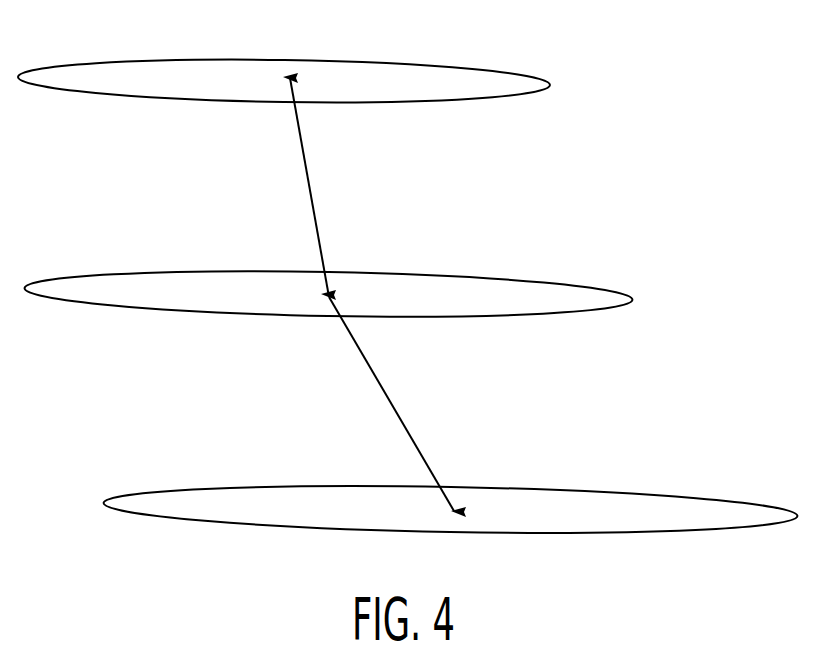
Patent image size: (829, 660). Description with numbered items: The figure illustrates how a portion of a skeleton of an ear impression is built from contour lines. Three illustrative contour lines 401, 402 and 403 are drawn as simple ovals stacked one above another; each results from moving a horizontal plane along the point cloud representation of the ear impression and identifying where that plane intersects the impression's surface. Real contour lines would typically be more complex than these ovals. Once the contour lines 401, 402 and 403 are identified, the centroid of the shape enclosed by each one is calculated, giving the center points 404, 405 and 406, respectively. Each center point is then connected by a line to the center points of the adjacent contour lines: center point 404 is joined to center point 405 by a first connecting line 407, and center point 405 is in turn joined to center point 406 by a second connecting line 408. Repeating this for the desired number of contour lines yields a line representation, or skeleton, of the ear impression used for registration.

The contour line 401 is at (552, 84).
The contour line 402 is at (633, 299).
The contour line 403 is at (738, 502).
The center point 404 is at (296, 78).
The center point 405 is at (334, 295).
The center point 406 is at (464, 512).
The first segment 407 is at (310, 188).
The second segment 408 is at (394, 406).